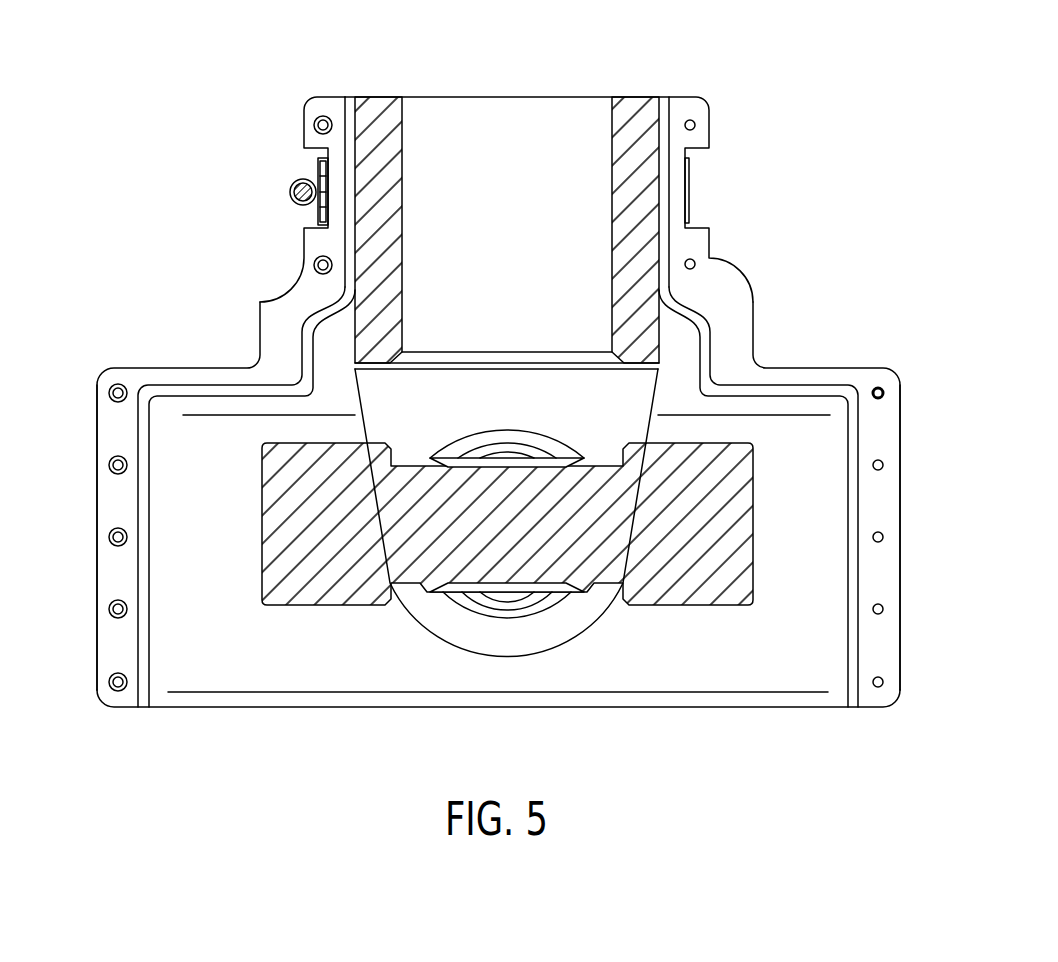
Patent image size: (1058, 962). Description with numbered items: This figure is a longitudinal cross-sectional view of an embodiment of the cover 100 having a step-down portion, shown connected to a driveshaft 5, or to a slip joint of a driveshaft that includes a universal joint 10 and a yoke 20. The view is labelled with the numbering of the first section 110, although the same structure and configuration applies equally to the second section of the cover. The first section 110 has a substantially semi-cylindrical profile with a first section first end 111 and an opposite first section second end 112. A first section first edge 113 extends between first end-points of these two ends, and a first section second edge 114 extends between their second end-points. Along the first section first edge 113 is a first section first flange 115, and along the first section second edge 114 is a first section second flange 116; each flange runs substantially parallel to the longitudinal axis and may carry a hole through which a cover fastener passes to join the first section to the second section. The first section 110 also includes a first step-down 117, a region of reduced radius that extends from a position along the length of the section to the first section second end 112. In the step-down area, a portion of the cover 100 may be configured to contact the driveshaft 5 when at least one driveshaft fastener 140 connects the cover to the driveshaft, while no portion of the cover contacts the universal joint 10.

The driveshaft 5 is at (377, 110).
The universal joint 10 is at (755, 528).
The yoke 20 is at (660, 430).
The cover 100 is at (500, 407).
The first section 110 is at (228, 477).
The first section first end 111 is at (293, 708).
The first section second end 112 is at (680, 97).
The first section first edge 113 is at (138, 543).
The first section second edge 114 is at (860, 573).
The first section first flange 115 is at (120, 643).
The first section second flange 116 is at (878, 643).
The first step-down 117 is at (307, 107).
The driveshaft fastener 140 is at (301, 179).